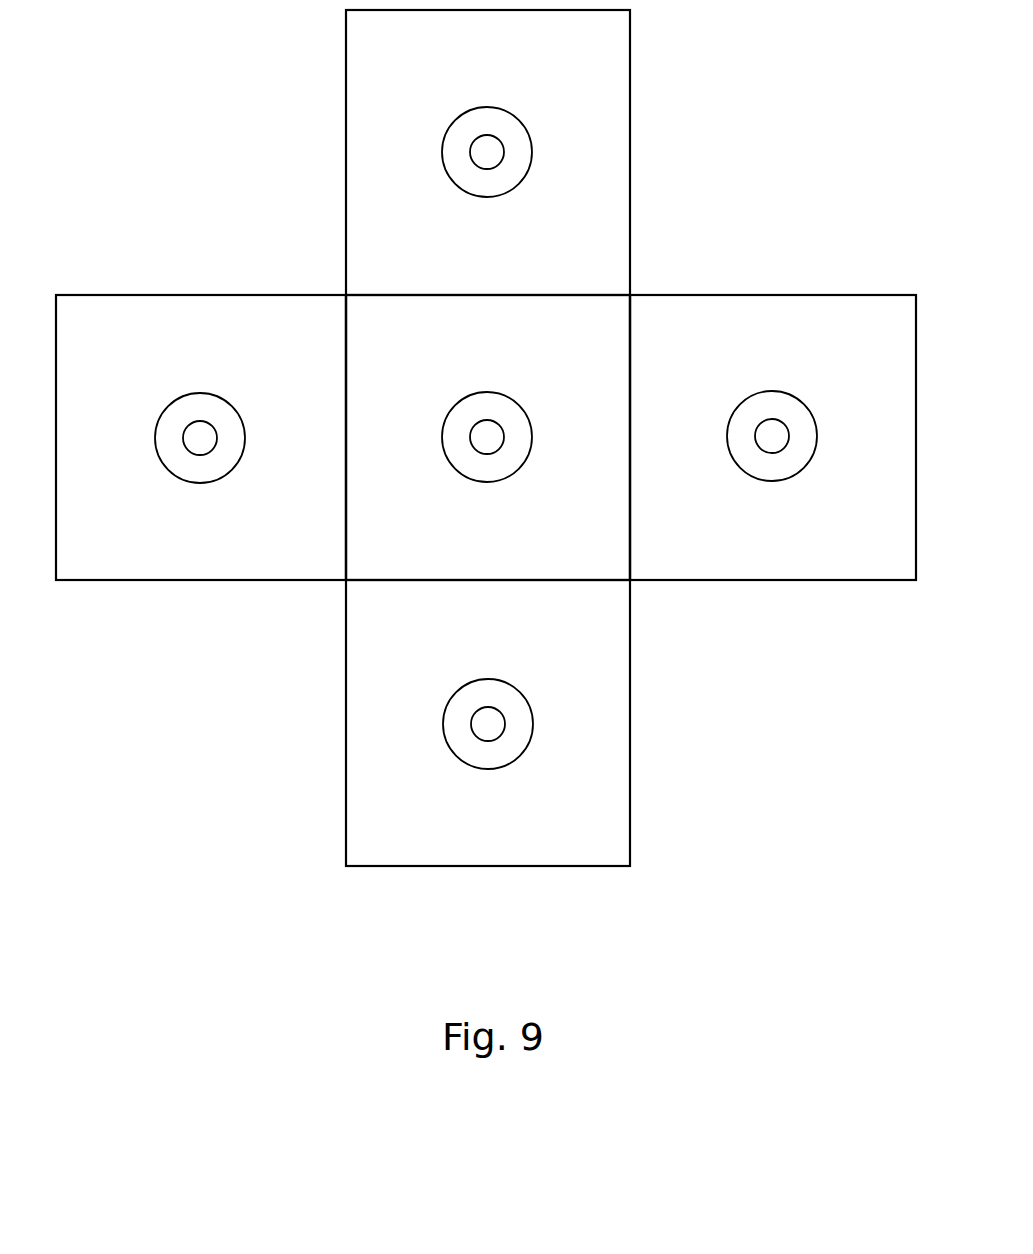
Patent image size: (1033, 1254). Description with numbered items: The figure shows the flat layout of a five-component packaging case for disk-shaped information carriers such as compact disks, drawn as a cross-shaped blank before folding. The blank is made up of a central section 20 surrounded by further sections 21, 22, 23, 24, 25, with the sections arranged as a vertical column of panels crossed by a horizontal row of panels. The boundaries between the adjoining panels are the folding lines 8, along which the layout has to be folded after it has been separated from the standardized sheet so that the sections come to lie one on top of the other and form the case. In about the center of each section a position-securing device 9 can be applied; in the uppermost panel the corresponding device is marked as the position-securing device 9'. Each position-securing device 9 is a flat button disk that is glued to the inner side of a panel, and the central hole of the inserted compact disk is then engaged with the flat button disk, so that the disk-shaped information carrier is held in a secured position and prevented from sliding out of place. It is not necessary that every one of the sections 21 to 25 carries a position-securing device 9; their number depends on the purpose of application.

The folding lines 8 is at (450, 295).
The position-securing device 9 is at (486, 558).
The position-securing device 9' is at (503, 122).
The section 20 is at (495, 403).
The section 21 is at (373, 818).
The section 22 is at (738, 562).
The section 23 is at (613, 190).
The section 24 is at (230, 325).
The section 25 is at (360, 545).